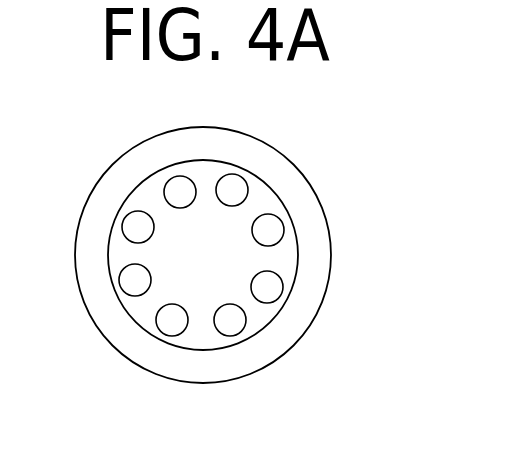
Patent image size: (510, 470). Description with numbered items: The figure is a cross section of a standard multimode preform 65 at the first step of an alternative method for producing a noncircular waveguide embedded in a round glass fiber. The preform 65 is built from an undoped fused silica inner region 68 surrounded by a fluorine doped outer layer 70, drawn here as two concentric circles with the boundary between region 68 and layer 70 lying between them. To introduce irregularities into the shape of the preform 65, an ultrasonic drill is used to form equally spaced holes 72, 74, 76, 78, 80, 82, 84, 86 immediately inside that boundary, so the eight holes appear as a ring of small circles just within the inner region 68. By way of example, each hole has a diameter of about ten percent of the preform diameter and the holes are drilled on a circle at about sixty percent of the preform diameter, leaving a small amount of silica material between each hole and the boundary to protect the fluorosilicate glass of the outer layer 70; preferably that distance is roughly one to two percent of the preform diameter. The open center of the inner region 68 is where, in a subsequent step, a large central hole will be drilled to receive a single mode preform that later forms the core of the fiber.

The preform 65 is at (59, 91).
The inner region 68 is at (203, 256).
The outer layer 70 is at (305, 205).
The hole 72 is at (273, 228).
The hole 74 is at (277, 290).
The hole 76 is at (233, 323).
The hole 78 is at (172, 320).
The hole 80 is at (132, 278).
The hole 82 is at (140, 225).
The hole 84 is at (180, 192).
The channel 86 is at (230, 191).